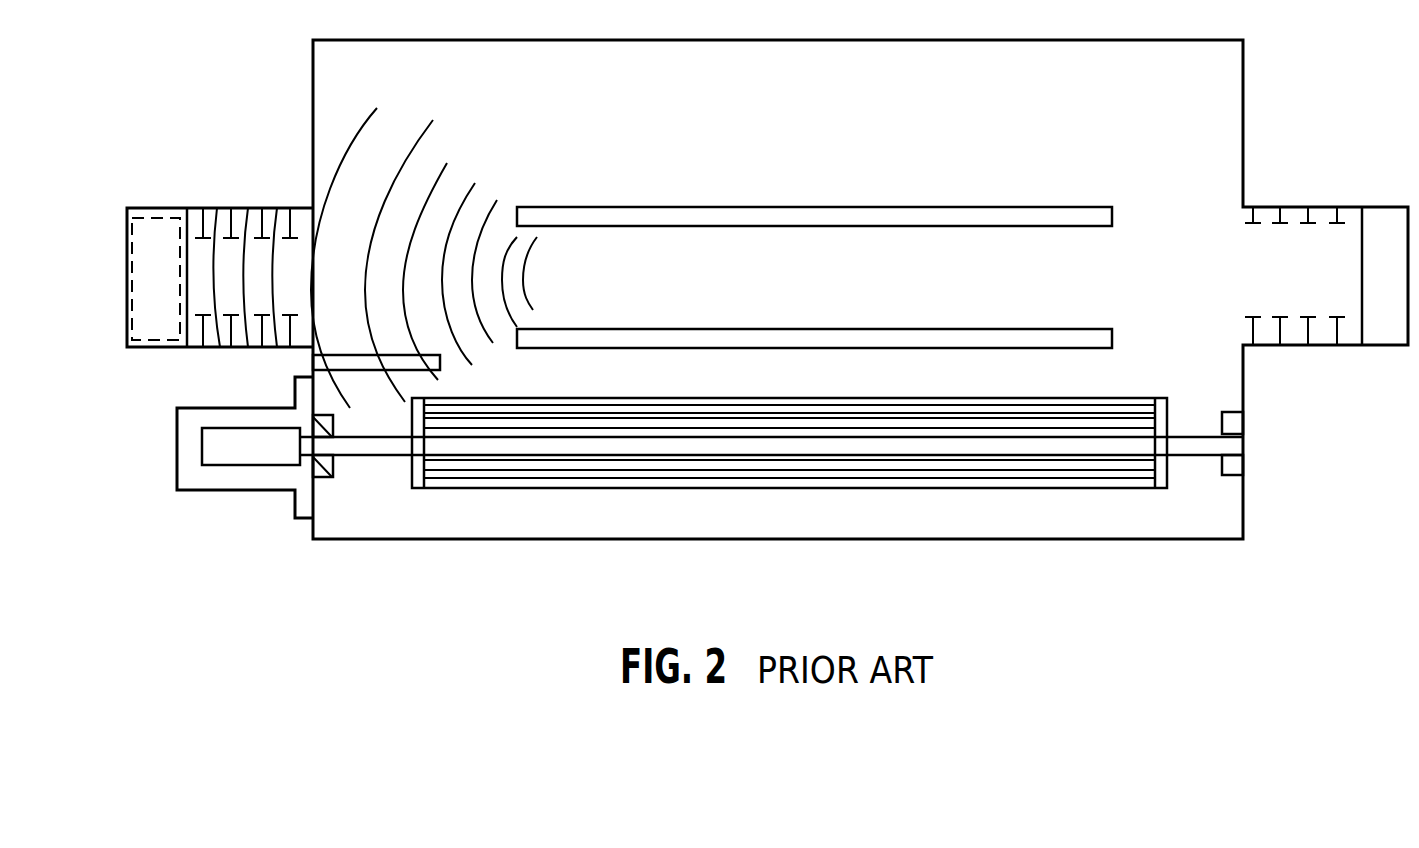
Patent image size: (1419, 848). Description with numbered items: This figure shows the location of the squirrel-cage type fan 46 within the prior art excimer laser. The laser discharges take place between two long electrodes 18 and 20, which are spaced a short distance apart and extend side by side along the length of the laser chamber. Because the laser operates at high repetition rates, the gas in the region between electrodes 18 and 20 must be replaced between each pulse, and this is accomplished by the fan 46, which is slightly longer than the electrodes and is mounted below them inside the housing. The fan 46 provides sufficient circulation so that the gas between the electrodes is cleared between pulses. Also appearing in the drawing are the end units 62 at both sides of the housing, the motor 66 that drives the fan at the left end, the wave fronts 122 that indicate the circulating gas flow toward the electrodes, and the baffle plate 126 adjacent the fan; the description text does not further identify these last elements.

The electrode 18 is at (887, 207).
The electrode 20 is at (772, 329).
The squirrel-cage type fan 46 is at (518, 478).
The end unit 62 is at (204, 208).
The motor 66 is at (240, 491).
The wave fronts 122 is at (470, 185).
The baffle plate 126 is at (425, 356).